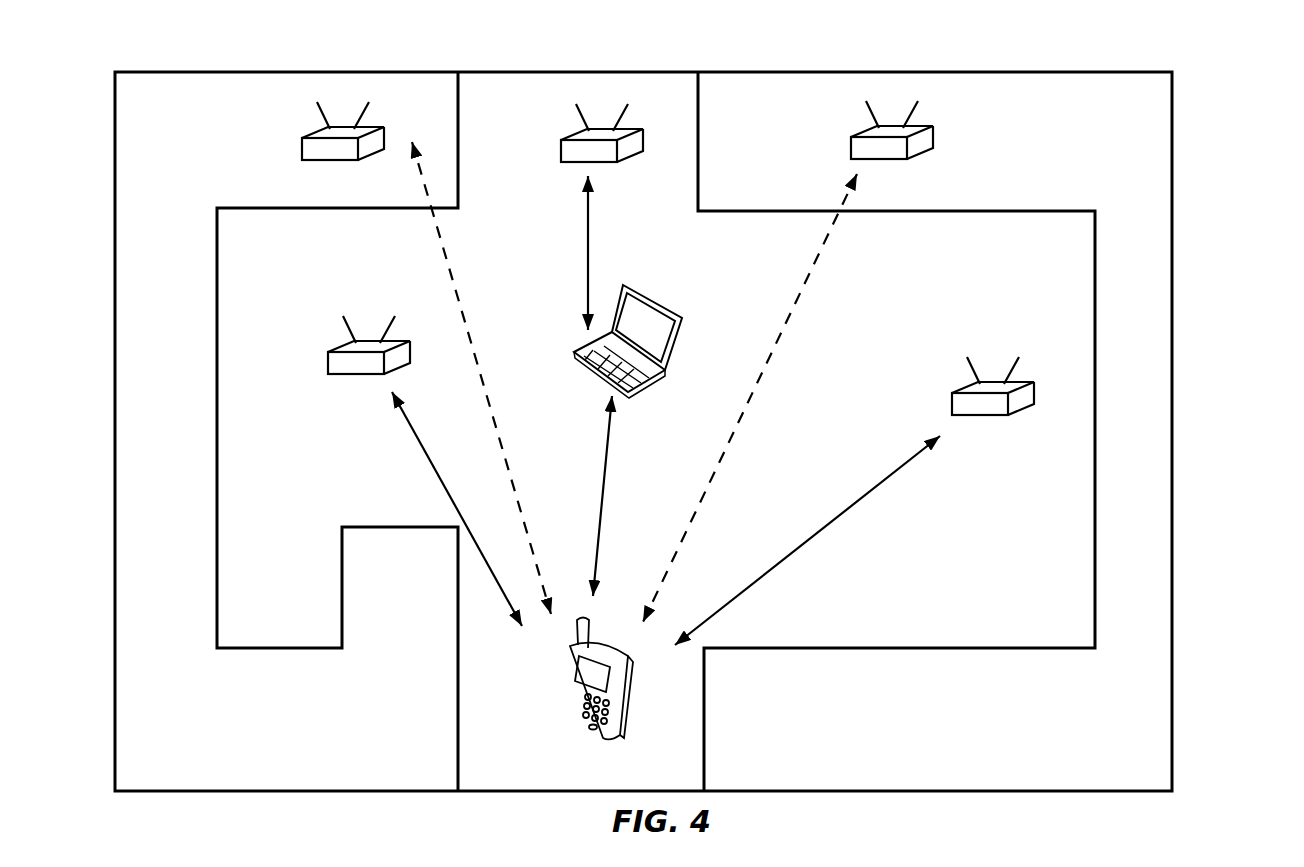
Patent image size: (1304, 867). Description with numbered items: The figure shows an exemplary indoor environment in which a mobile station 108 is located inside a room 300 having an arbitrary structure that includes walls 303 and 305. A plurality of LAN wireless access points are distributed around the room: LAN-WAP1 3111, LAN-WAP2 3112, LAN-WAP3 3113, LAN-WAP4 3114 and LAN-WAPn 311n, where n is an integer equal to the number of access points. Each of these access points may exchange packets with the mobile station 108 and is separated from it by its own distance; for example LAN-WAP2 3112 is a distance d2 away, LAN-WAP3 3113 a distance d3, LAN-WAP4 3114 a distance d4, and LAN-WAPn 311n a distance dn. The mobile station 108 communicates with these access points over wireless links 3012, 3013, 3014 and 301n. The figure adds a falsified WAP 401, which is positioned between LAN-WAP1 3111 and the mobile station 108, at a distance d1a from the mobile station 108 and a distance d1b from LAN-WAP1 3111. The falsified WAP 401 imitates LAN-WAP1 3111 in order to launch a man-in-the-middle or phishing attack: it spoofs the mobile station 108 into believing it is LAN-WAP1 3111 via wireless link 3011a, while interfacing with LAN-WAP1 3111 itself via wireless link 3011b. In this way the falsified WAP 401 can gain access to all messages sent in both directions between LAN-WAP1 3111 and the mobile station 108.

The room 300 is at (1215, 105).
The wall 303 is at (965, 648).
The wall 305 is at (240, 648).
The LAN-WAP1 3111 is at (561, 151).
The LAN-WAP2 3112 is at (328, 362).
The LAN-WAP3 3113 is at (995, 415).
The LAN-WAP4 3114 is at (302, 150).
The LAN-WAPn 311n is at (851, 148).
The wireless link 3011a is at (610, 456).
The wireless link 3011b is at (586, 268).
The wireless link 3012 is at (406, 420).
The wireless link 3013 is at (888, 478).
The wireless link 3014 is at (449, 264).
The wireless link 301n is at (816, 262).
The falsified WAP 401 is at (668, 307).
The mobile station 108 is at (630, 716).